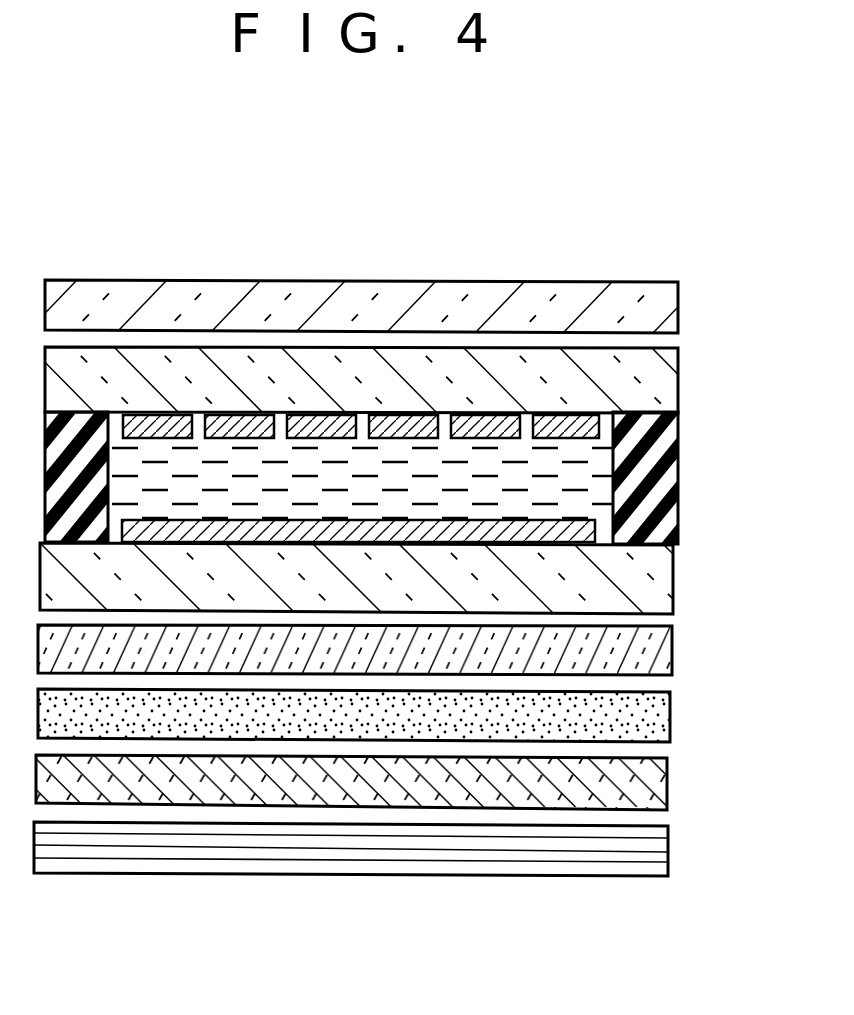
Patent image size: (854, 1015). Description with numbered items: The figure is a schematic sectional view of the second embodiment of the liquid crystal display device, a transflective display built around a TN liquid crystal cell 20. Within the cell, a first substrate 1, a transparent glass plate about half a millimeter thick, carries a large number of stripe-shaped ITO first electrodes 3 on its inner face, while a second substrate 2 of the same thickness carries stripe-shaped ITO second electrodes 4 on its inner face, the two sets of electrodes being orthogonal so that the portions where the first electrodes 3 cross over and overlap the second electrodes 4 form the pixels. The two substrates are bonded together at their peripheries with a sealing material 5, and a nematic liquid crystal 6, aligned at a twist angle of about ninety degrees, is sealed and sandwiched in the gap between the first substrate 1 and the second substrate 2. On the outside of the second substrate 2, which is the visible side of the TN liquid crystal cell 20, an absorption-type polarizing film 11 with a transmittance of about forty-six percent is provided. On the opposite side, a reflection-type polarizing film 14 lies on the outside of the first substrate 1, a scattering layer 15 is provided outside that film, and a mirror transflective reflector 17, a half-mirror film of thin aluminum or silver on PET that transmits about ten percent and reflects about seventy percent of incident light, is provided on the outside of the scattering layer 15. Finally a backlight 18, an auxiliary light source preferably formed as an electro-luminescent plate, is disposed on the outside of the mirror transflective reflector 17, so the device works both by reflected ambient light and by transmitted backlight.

The first substrate 1 is at (476, 563).
The second substrate 2 is at (325, 368).
The first electrodes 3 is at (547, 530).
The second electrodes 4 is at (400, 418).
The sealing material 5 is at (88, 455).
The nematic liquid crystal 6 is at (228, 480).
The absorption-type polarizing film 11 is at (678, 304).
The reflection-type polarizing film 14 is at (657, 659).
The scattering layer 15 is at (653, 720).
The mirror transflective reflector 17 is at (660, 780).
The backlight 18 is at (655, 855).
The TN liquid crystal cell 20 is at (389, 392).